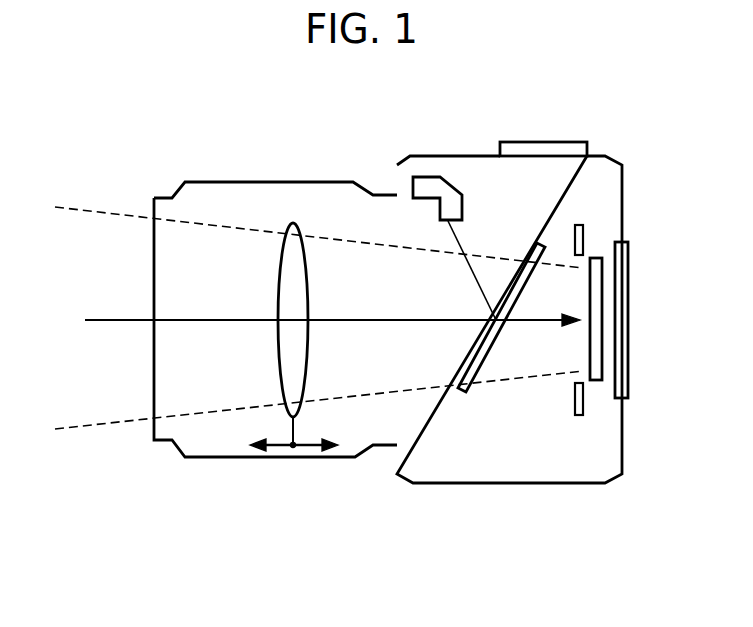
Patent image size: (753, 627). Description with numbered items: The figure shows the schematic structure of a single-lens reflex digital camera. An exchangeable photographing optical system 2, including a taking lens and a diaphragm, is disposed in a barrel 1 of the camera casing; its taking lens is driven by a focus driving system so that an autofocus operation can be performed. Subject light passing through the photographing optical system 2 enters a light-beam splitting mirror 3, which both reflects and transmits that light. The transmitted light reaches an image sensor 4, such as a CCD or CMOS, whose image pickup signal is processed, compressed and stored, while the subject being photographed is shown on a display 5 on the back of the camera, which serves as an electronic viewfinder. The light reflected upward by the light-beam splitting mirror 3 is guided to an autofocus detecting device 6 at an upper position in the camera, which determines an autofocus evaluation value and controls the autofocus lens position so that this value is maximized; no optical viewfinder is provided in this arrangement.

The barrel 1 is at (318, 182).
The photographing optical system 2 is at (279, 262).
The light-beam splitting mirror 3 is at (466, 394).
The image sensor 4 is at (595, 258).
The display 5 is at (631, 274).
The autofocus detecting device 6 is at (431, 177).